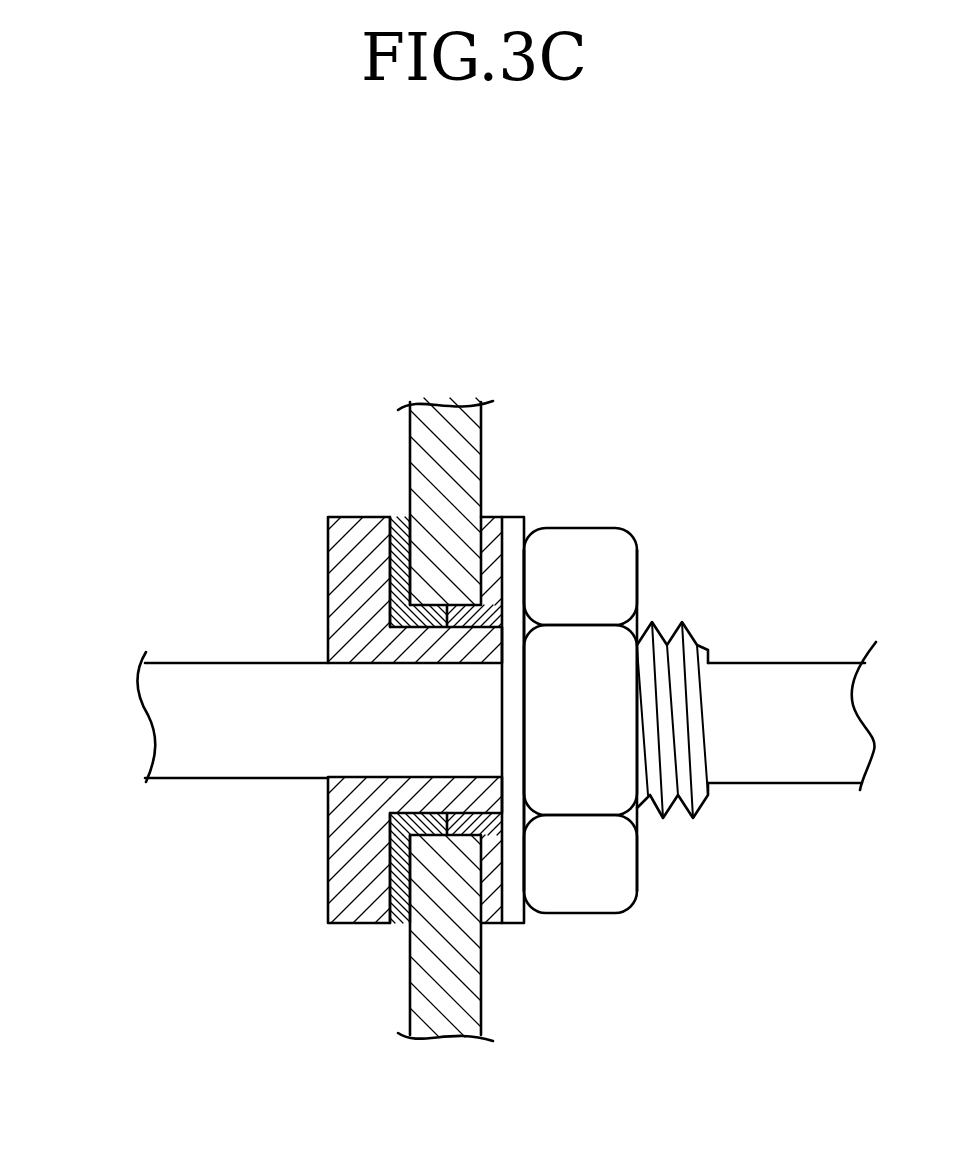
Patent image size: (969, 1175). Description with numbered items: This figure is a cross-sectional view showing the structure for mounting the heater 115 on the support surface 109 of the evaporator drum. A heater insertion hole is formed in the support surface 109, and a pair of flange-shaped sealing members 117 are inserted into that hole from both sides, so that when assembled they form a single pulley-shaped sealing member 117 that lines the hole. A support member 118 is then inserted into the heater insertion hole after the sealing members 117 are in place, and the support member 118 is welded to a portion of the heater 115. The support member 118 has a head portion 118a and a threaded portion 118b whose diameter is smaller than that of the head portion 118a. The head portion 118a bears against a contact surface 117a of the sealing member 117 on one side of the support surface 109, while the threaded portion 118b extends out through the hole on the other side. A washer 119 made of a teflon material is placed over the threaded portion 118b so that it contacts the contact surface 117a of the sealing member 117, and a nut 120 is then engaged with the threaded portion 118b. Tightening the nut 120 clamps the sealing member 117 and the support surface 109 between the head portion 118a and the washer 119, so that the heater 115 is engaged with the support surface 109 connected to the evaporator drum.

The support surface 109 is at (499, 427).
The heater 115 is at (216, 801).
The sealing member 117 is at (394, 937).
The contact surface 117a is at (490, 515).
The support member 118 is at (297, 892).
The head portion 118a is at (358, 580).
The threaded portion 118b is at (690, 632).
The washer 119 is at (512, 517).
The nut 120 is at (615, 552).